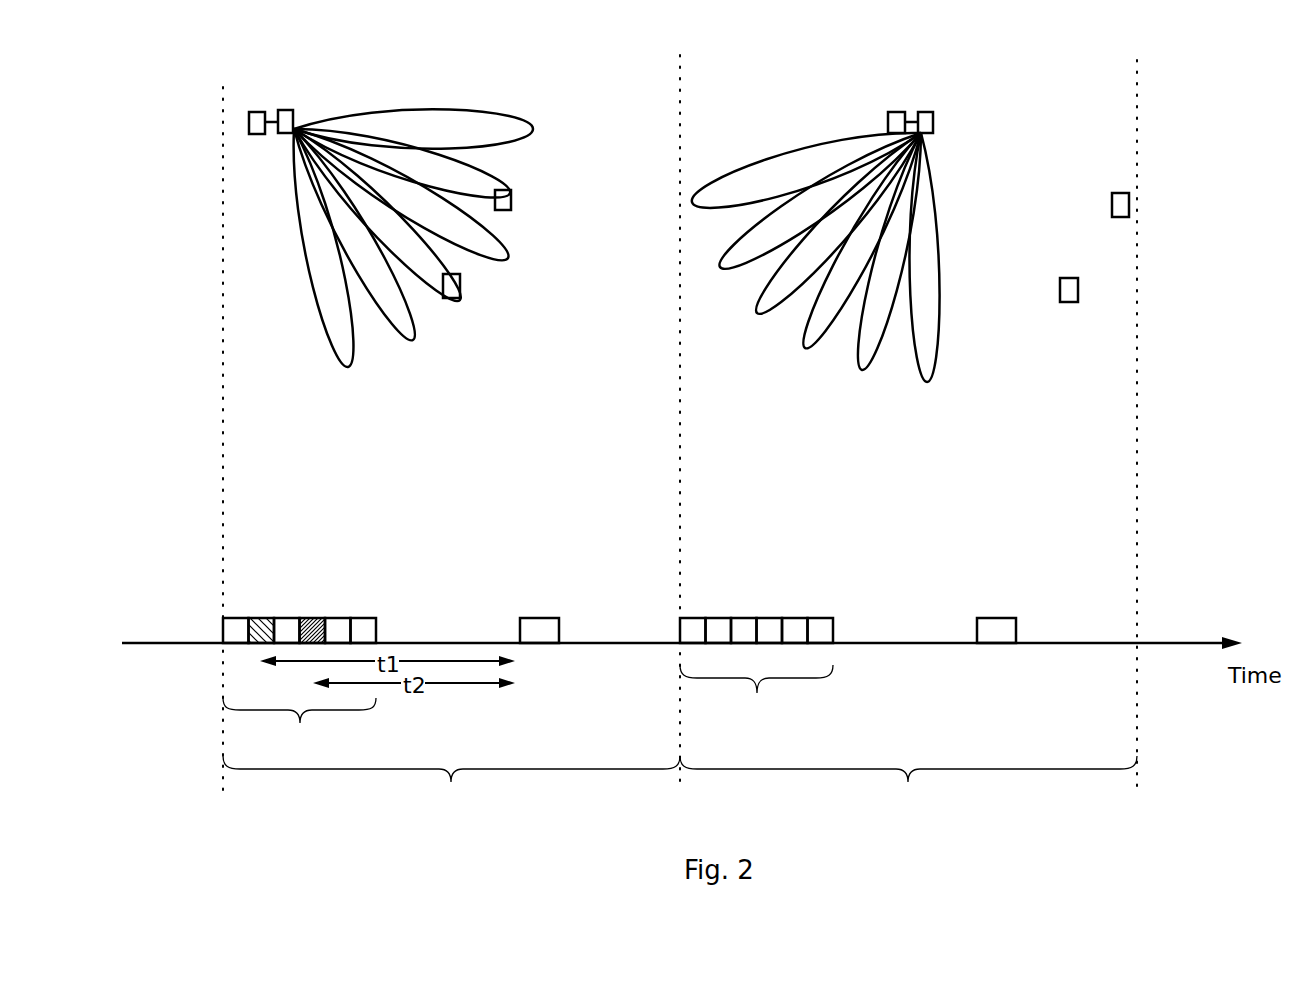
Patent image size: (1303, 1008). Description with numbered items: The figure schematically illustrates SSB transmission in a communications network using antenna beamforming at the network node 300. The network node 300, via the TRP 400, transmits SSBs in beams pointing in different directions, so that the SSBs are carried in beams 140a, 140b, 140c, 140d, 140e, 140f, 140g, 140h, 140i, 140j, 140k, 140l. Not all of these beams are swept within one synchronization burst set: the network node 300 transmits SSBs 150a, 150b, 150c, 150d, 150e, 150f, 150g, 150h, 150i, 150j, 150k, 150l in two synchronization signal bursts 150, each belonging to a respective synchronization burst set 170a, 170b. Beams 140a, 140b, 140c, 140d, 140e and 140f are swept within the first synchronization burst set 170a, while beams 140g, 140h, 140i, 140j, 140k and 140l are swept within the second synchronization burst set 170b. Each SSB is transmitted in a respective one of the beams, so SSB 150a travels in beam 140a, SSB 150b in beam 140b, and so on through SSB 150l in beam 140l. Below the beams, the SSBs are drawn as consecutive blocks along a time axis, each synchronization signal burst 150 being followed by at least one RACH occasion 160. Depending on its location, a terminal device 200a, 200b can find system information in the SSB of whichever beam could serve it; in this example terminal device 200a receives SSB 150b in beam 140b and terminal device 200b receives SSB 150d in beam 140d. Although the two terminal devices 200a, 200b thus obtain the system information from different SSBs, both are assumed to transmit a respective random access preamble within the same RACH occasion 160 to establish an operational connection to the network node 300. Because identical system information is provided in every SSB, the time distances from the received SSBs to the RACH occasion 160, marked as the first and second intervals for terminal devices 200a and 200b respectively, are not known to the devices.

The network node 300 is at (257, 112).
The TRP 400 is at (286, 110).
The beam 140a is at (533, 126).
The beam 140b is at (507, 180).
The beam 140c is at (505, 258).
The beam 140d is at (425, 293).
The beam 140e is at (413, 342).
The beam 140f is at (350, 370).
The beam 140g is at (930, 378).
The beam 140h is at (886, 345).
The beam 140i is at (803, 350).
The beam 140j is at (752, 315).
The beam 140k is at (710, 268).
The beam 140l is at (752, 165).
The terminal device 200a is at (511, 200).
The terminal device 200b is at (460, 285).
The synchronization signal burst 150 is at (528, 714).
The SSB 150a is at (235, 618).
The SSB 150b is at (262, 618).
The SSB 150c is at (288, 618).
The SSB 150d is at (307, 618).
The SSB 150e is at (335, 618).
The SSB 150f is at (362, 618).
The SSB 150g is at (690, 618).
The SSB 150h is at (717, 618).
The SSB 150i is at (743, 618).
The SSB 150j is at (768, 618).
The SSB 150k is at (795, 618).
The SSB 150l is at (820, 618).
The RACH occasion 160 is at (538, 618).
The first synchronization burst set 170a is at (451, 792).
The second synchronization burst set 170b is at (908, 792).